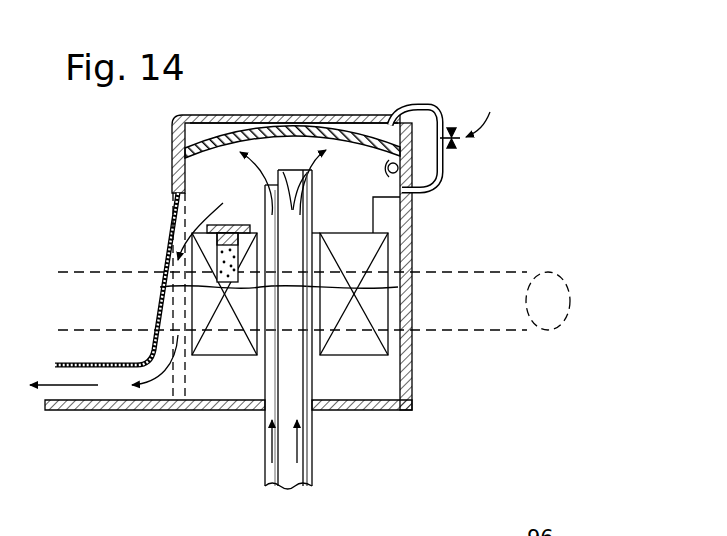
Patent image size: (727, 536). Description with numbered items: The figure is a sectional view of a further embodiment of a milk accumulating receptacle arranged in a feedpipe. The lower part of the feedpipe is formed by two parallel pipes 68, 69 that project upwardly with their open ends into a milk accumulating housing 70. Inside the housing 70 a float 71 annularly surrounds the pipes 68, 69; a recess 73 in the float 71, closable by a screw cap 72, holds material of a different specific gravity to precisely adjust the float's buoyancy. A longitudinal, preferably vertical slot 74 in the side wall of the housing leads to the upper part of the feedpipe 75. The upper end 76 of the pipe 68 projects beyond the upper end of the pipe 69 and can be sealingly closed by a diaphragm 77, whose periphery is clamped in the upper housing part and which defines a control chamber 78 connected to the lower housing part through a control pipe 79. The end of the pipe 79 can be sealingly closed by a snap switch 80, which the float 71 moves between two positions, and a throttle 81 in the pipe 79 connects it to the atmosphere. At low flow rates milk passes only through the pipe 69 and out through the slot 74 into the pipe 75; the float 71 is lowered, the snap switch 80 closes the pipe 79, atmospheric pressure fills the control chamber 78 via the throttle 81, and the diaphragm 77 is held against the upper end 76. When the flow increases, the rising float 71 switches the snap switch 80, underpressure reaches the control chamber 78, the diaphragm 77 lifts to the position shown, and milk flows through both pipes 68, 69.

The pipe 68 is at (305, 465).
The pipe 69 is at (272, 462).
The milk accumulating housing 70 is at (413, 367).
The float 71 is at (377, 275).
The screw cap 72 is at (230, 225).
The recess 73 is at (166, 258).
The slot 74 is at (181, 396).
The upper part of the feedpipe 75 is at (103, 383).
The upper end of the pipe 76 is at (307, 128).
The diaphragm 77 is at (362, 128).
The control chamber 78 is at (213, 128).
The control pipe 79 is at (433, 105).
The snap switch 80 is at (413, 173).
The throttle 81 is at (465, 140).